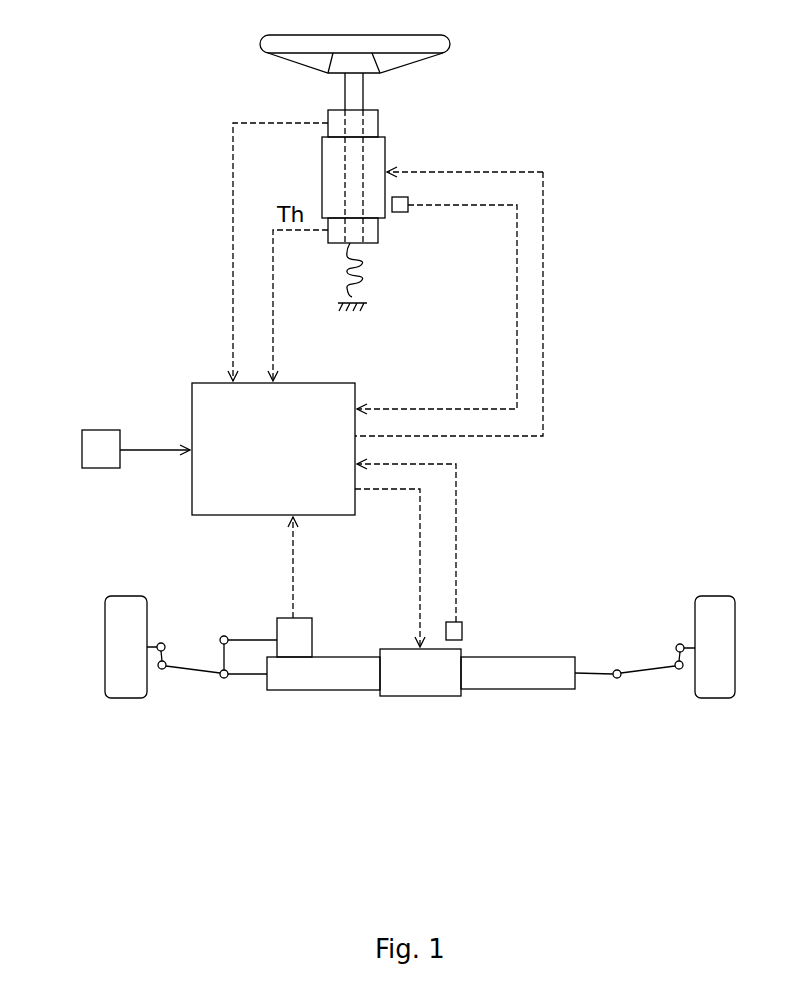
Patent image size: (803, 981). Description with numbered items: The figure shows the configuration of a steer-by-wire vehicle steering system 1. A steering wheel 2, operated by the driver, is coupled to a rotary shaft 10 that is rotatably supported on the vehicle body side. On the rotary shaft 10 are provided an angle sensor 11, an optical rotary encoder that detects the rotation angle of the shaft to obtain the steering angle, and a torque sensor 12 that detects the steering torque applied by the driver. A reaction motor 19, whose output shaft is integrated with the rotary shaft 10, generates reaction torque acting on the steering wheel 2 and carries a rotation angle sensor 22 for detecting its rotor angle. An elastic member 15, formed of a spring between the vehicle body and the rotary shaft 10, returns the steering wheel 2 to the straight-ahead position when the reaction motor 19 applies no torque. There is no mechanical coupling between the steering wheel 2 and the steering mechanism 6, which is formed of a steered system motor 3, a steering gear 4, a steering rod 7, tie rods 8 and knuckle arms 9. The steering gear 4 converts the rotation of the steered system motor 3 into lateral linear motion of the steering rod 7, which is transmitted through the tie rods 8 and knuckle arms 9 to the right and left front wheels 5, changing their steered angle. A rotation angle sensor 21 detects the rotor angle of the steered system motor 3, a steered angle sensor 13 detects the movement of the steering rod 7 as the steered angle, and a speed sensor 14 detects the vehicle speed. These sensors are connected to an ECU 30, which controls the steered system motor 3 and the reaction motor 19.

The vehicle steering system 1 is at (556, 71).
The steering wheel 2 is at (443, 43).
The steered system motor 3 is at (424, 688).
The steering gear 4 is at (319, 681).
The front wheels 5 is at (126, 697).
The steering mechanism 6 is at (459, 732).
The steering rod 7 is at (251, 679).
The tie rods 8 is at (194, 677).
The knuckle arms 9 is at (165, 653).
The rotary shaft 10 is at (364, 92).
The angle sensor 11 is at (379, 124).
The torque sensor 12 is at (379, 235).
The steered angle sensor 13 is at (306, 632).
The speed sensor 14 is at (82, 451).
The elastic member 15 is at (364, 282).
The reaction motor 19 is at (386, 156).
The rotation angle sensor 21 is at (464, 632).
The rotation angle sensor 22 is at (400, 197).
The ECU 30 is at (312, 383).